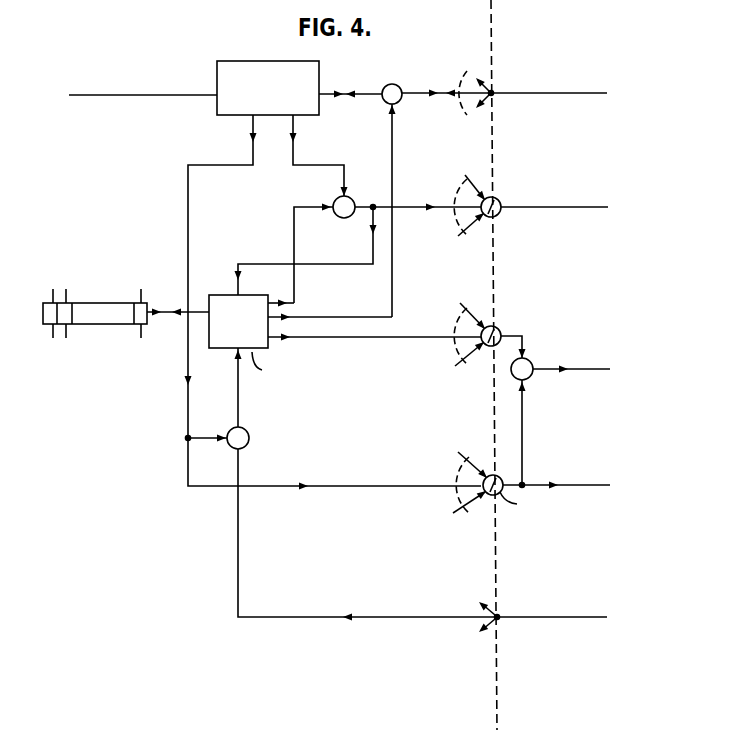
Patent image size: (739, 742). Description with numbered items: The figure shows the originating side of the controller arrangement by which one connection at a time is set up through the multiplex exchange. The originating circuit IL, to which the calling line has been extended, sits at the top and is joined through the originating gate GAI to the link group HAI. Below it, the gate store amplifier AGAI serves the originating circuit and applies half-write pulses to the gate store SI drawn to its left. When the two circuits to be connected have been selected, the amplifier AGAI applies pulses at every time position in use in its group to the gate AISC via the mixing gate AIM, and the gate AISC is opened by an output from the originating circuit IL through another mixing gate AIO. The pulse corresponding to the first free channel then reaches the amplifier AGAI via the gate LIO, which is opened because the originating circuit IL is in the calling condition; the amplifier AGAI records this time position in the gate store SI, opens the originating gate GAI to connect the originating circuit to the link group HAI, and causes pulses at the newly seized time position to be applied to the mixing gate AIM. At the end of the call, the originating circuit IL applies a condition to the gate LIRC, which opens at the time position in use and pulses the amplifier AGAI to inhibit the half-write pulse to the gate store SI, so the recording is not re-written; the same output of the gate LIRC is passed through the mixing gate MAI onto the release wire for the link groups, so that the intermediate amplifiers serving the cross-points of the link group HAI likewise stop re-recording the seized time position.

The originating circuit IL is at (275, 61).
The originating gate GAI is at (425, 57).
The link group HAI is at (504, 92).
The gate L1RC LIRC is at (358, 239).
The gate store amplifier AGAI is at (314, 361).
The gate store SI is at (95, 301).
The gate L10 LIO is at (397, 531).
The mixing gate Ma1 MAI is at (497, 200).
The mixing gate A1M AIM is at (497, 328).
The gate A1SC AISC is at (560, 414).
The mixing gate A10 AIO is at (533, 494).